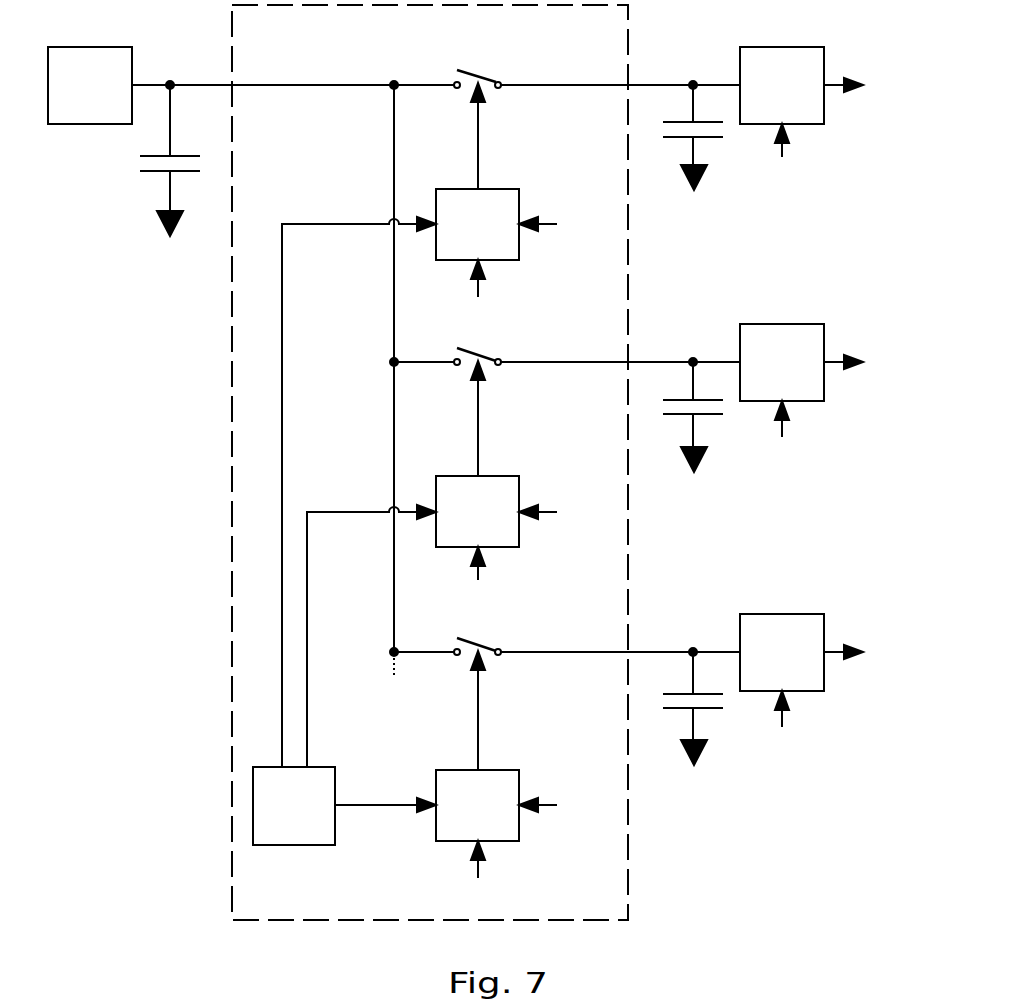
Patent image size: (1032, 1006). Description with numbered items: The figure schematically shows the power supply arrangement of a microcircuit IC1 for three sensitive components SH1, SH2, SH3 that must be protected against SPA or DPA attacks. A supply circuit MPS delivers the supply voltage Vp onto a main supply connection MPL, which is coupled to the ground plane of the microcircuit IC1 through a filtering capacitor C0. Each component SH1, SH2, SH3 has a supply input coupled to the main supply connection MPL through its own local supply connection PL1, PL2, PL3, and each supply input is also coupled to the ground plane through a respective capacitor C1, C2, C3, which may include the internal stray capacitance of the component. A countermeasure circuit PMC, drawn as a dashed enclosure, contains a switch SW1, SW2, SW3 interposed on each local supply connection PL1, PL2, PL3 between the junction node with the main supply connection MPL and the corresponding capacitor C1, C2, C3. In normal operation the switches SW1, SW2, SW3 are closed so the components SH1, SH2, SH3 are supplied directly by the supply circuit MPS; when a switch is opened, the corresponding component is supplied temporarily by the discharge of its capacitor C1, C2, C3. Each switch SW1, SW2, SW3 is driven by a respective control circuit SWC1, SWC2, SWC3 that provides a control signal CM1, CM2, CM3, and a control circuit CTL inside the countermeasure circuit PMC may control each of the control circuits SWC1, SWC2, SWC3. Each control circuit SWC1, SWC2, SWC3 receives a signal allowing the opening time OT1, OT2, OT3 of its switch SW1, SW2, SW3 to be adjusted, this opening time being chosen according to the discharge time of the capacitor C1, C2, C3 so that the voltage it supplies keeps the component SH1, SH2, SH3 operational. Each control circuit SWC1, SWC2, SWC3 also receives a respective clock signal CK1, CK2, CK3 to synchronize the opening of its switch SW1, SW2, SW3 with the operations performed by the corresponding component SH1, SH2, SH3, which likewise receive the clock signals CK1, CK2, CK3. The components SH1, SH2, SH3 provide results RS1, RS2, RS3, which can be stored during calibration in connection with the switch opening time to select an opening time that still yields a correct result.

The supply circuit MPS is at (63, 99).
The main supply connection MPL is at (191, 83).
The filtering capacitor C0 is at (140, 172).
The countermeasure circuit PMC is at (313, 912).
The microcircuit IC1 is at (112, 444).
The control circuit CTL is at (270, 820).
The local supply connection PL1 is at (424, 83).
The local supply connection PL2 is at (420, 365).
The local supply connection PL3 is at (423, 655).
The switch SW1 is at (487, 77).
The switch SW2 is at (485, 354).
The switch SW3 is at (485, 643).
The control signal CM1 is at (468, 171).
The control signal CM2 is at (468, 454).
The control signal CM3 is at (468, 746).
The control circuit SWC1 is at (515, 239).
The control circuit SWC2 is at (515, 525).
The control circuit SWC3 is at (515, 819).
The opening time OT1 is at (565, 223).
The opening time OT2 is at (565, 512).
The opening time OT3 is at (565, 805).
The clock signal CK1 is at (631, 226).
The clock signal CK2 is at (631, 509).
The clock signal CK3 is at (631, 800).
The capacitor C1 is at (665, 140).
The capacitor C2 is at (665, 417).
The capacitor C3 is at (665, 710).
The component SH1 is at (808, 99).
The component SH2 is at (808, 376).
The component SH3 is at (808, 666).
The result RS1 is at (871, 85).
The result RS2 is at (871, 362).
The result RS3 is at (871, 652).